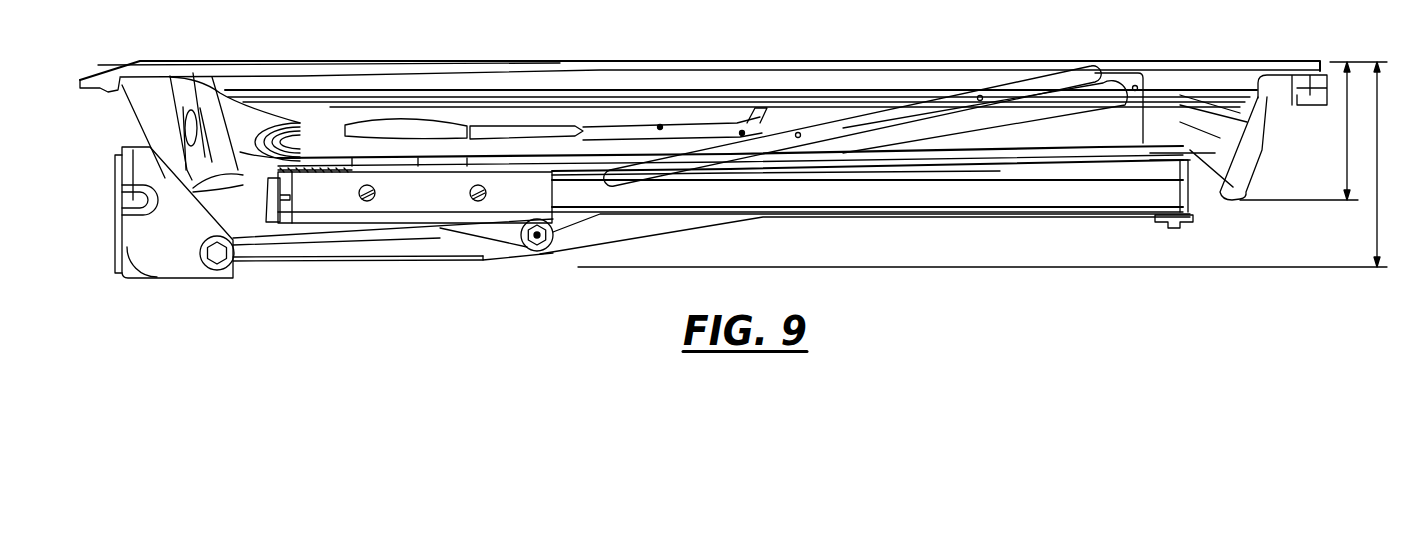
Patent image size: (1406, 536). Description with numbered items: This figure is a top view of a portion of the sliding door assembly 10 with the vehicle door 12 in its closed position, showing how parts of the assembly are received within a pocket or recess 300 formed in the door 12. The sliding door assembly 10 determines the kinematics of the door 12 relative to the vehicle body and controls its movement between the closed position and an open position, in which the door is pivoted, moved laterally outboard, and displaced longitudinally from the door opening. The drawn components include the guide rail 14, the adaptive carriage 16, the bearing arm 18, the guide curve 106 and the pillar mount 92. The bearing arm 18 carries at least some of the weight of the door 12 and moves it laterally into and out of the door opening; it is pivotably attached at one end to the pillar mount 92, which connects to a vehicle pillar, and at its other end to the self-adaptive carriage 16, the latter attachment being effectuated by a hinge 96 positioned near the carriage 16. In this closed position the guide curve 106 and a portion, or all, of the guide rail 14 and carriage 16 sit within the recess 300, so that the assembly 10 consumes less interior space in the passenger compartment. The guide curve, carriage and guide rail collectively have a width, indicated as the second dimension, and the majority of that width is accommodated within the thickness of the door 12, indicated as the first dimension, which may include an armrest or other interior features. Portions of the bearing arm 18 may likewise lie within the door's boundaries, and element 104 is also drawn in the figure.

The sliding door assembly 10 is at (437, 294).
The vehicle door 12 is at (742, 63).
The guide rail 14 is at (620, 193).
The adaptive carriage 16 is at (400, 200).
The bearing arm 18 is at (289, 248).
The pillar mount 92 is at (178, 259).
The hinge 96 is at (537, 251).
The rear link 104 is at (1100, 87).
The guide curve 106 is at (1001, 88).
The recess 300 is at (122, 122).